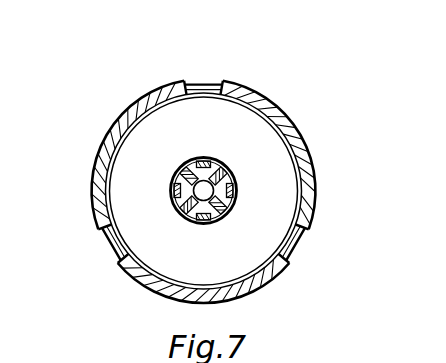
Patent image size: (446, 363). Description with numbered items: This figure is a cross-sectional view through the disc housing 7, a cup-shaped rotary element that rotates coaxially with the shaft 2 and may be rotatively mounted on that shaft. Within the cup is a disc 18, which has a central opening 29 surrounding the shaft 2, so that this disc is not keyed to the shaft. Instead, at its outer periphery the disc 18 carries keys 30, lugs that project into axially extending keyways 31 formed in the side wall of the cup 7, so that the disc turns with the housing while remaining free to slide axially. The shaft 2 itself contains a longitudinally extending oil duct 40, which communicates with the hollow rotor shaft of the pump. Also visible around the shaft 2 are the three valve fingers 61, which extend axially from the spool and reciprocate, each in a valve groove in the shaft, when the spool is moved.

The disc housing 7 is at (280, 121).
The disc 18 is at (290, 184).
The key 30 is at (202, 88).
The keyway 31 is at (222, 83).
The shaft 2 is at (237, 188).
The oil duct 40 is at (204, 191).
The valve finger 61 is at (176, 168).
The opening 29 is at (232, 203).